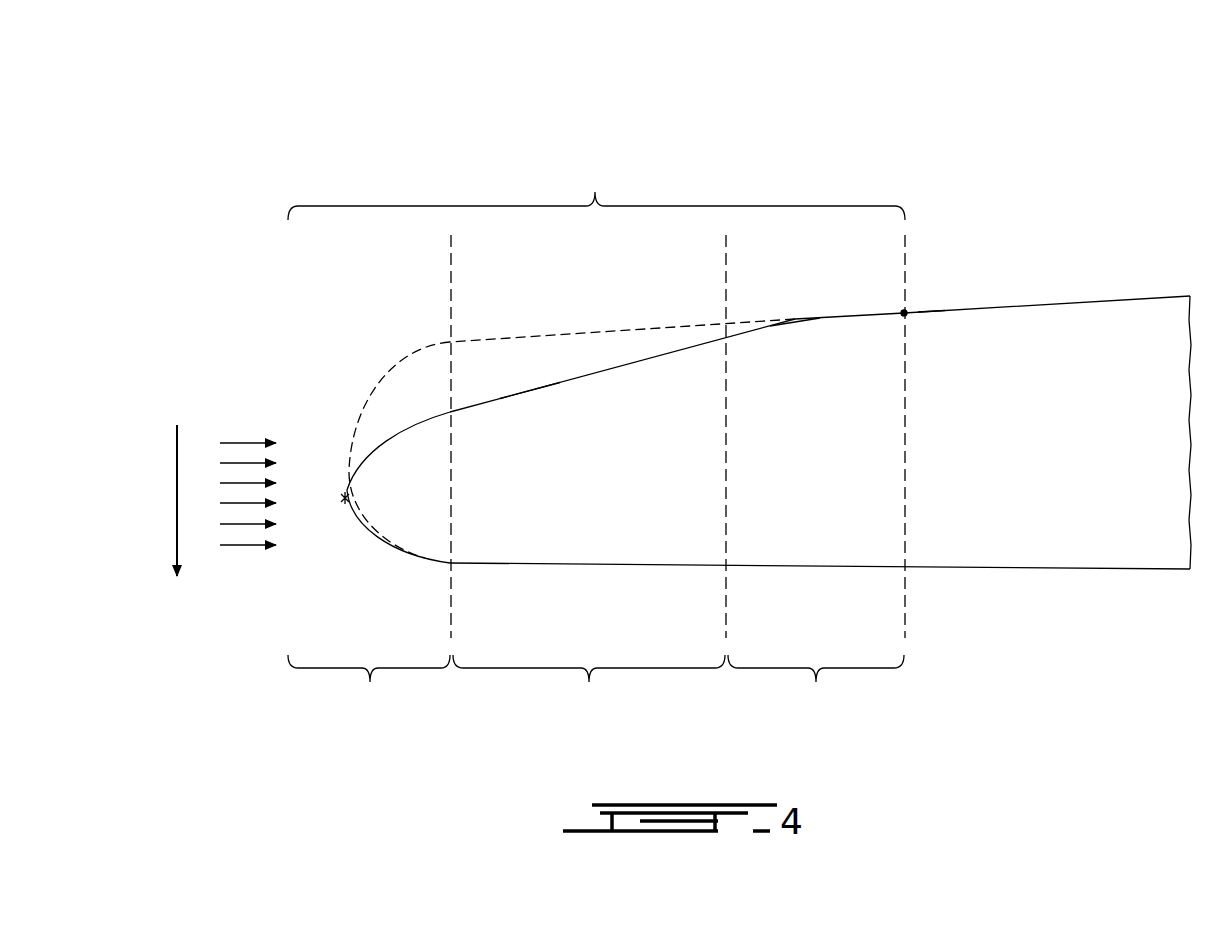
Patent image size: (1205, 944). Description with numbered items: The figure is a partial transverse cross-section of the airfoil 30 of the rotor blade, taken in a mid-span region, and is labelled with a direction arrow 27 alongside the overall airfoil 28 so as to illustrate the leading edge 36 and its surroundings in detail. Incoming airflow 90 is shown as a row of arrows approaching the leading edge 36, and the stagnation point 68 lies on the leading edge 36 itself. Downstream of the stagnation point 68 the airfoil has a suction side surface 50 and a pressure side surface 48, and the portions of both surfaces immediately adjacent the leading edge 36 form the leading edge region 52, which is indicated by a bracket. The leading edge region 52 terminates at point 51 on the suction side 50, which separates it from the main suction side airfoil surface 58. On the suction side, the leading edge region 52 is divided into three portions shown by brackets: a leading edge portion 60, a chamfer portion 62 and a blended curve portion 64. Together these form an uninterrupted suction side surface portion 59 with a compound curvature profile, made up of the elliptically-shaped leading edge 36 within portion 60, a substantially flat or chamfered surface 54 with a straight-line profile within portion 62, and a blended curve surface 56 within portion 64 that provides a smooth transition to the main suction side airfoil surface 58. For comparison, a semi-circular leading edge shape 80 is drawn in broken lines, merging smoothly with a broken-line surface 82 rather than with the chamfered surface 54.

The spanwise direction arrow 27 is at (177, 476).
The airfoil 28 is at (836, 226).
The airfoil 30 is at (930, 315).
The leading edge 36 is at (397, 432).
The pressure side surface 48 is at (917, 569).
The suction side surface 50 is at (1012, 304).
The point 51 is at (904, 315).
The leading edge region 52 is at (596, 190).
The flat surface 54 is at (617, 371).
The blended curve surface 56 is at (795, 327).
The main suction side airfoil surface 58 is at (1102, 297).
The suction side surface portion 59 is at (528, 389).
The leading edge portion 60 is at (369, 684).
The chamfer portion 62 is at (589, 684).
The blended curve portion 64 is at (816, 684).
The stagnation point 68 is at (345, 498).
The semi-circular leading edge shape 80 is at (403, 358).
The surface 82 is at (637, 328).
The airflow 90 is at (240, 441).